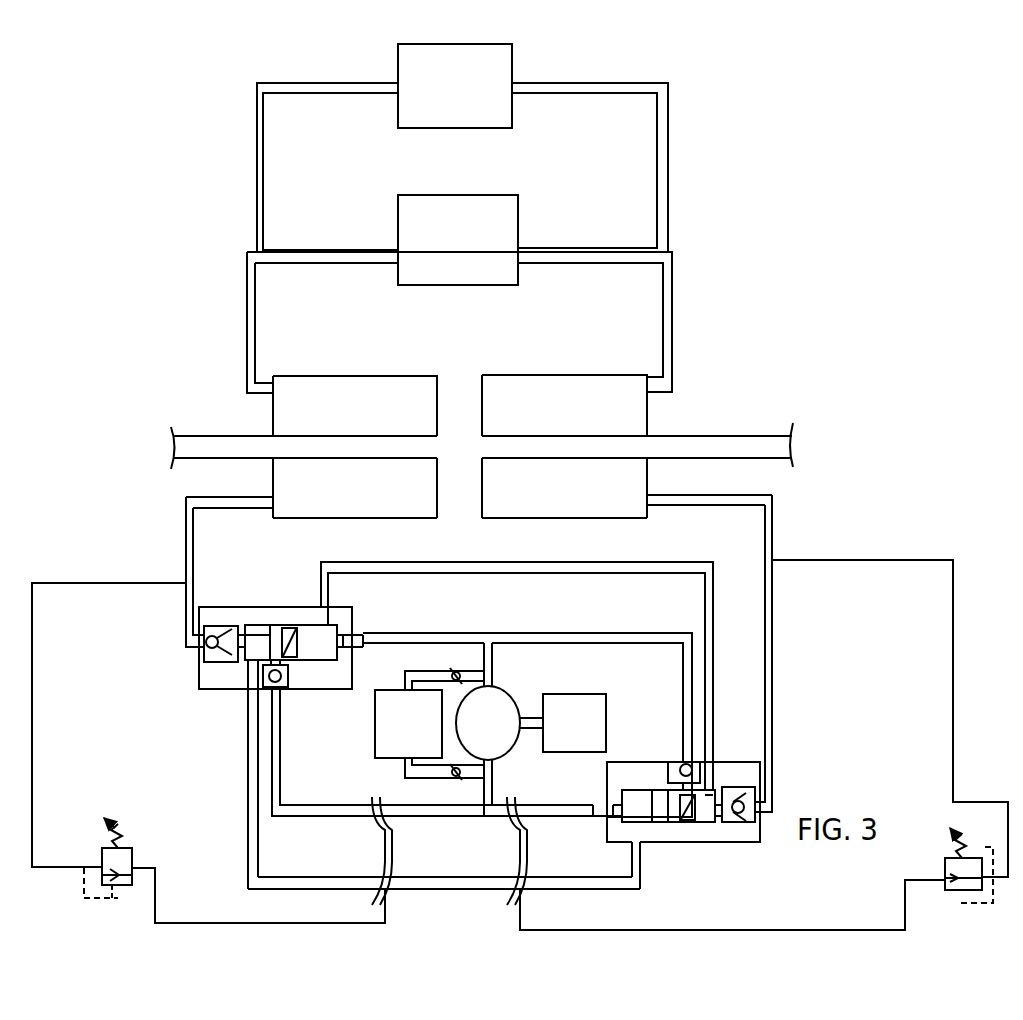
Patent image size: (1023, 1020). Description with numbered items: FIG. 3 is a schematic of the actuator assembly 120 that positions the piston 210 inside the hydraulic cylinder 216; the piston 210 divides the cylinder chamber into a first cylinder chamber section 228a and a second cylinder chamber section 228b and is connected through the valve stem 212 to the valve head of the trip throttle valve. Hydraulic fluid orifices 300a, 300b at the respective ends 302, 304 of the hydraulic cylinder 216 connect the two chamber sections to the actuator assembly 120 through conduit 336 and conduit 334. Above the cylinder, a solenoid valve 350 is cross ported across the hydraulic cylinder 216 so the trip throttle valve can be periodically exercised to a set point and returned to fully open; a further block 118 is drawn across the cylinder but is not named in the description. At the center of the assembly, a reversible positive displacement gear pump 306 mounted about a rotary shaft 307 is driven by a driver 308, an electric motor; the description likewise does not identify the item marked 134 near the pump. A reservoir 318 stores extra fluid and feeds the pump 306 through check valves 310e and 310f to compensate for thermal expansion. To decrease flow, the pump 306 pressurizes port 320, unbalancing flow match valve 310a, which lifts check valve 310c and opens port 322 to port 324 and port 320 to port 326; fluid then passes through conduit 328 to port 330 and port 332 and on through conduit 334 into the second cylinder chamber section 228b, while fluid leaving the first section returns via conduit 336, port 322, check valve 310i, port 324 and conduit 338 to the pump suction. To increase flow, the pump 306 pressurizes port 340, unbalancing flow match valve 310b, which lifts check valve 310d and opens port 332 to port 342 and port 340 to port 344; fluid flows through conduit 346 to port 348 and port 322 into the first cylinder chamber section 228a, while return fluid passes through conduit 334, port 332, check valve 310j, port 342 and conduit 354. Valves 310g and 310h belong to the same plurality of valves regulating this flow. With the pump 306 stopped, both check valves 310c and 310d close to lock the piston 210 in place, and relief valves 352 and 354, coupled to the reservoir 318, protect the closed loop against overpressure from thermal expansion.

The solenoid valve 350 is at (438, 100).
The controller 118 is at (443, 249).
The first cylinder chamber section 228a is at (360, 380).
The second cylinder chamber section 228b is at (558, 380).
The end of hydraulic cylinder 302 is at (270, 419).
The end of hydraulic cylinder 304 is at (656, 419).
The piston 210 is at (474, 418).
The valve stem 212 is at (770, 432).
The actuator assembly 120 is at (122, 518).
The hydraulic cylinder 216 is at (565, 520).
The hydraulic fluid orifice 300a is at (268, 511).
The hydraulic fluid orifice 300b is at (654, 514).
The conduit 336 is at (185, 568).
The conduit 334 is at (772, 584).
The conduit 328 is at (472, 566).
The port 326 is at (330, 606).
The flow match valve 310a is at (282, 604).
The port 322 is at (198, 650).
The check valve 310c is at (215, 673).
The port 320 is at (358, 650).
The valve 310g is at (300, 664).
The check valve 310i is at (283, 690).
The port 324 is at (268, 690).
The port 348 is at (243, 694).
The conduit 338 is at (340, 800).
The conduit 346 is at (440, 880).
The reservoir 318 is at (423, 735).
The check valve 310e is at (455, 668).
The check valve 310f is at (457, 782).
The pump assembly 134 is at (532, 704).
The pump 306 is at (473, 735).
The rotary shaft 307 is at (527, 716).
The driver 308 is at (559, 735).
The pressure relief valve 354 is at (565, 637).
The port 342 is at (670, 758).
The check valve 310j is at (688, 758).
The port 330 is at (714, 755).
The flow match valve 310b is at (732, 756).
The port 344 is at (625, 846).
The port 340 is at (602, 798).
The valve 310h is at (663, 806).
The check valve 310d is at (722, 822).
The port 332 is at (757, 816).
The relief valve 352 is at (125, 895).